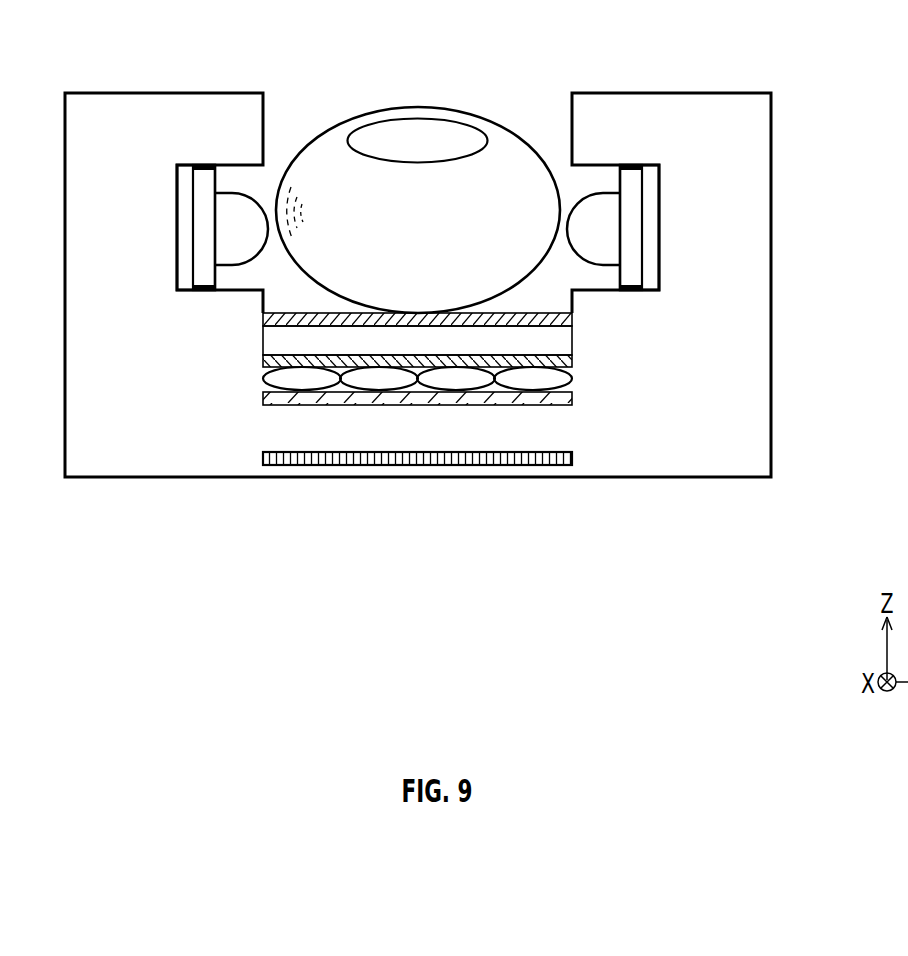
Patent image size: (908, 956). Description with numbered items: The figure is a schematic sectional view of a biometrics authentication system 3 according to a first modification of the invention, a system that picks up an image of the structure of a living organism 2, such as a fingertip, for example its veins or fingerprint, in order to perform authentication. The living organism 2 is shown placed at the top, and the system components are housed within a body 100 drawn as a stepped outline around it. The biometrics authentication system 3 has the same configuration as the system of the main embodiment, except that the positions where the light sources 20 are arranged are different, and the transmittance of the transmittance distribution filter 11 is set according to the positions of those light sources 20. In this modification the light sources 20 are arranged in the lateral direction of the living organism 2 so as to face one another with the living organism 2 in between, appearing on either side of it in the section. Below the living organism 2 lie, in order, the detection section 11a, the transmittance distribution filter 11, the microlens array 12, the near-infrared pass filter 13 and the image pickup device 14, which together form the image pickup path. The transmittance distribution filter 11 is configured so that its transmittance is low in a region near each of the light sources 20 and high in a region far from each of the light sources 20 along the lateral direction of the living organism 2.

The living organism 2 is at (414, 107).
The biometrics authentication system 3 is at (763, 522).
The light sources 20 is at (223, 193).
The housing 100 is at (765, 277).
The detection section 11a is at (560, 319).
The transmittance distribution filter 11 is at (560, 360).
The microlens array 12 is at (556, 378).
The near-infrared pass filter 13 is at (565, 398).
The image pickup device 14 is at (565, 456).